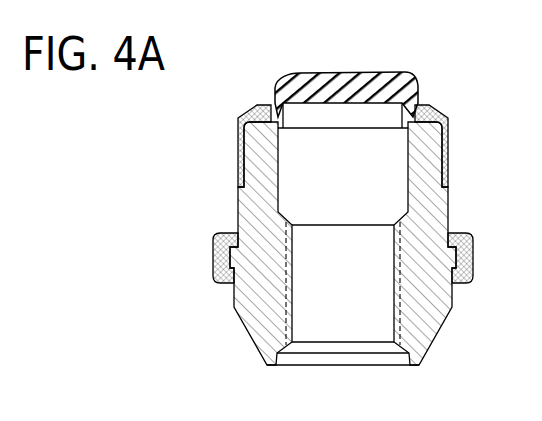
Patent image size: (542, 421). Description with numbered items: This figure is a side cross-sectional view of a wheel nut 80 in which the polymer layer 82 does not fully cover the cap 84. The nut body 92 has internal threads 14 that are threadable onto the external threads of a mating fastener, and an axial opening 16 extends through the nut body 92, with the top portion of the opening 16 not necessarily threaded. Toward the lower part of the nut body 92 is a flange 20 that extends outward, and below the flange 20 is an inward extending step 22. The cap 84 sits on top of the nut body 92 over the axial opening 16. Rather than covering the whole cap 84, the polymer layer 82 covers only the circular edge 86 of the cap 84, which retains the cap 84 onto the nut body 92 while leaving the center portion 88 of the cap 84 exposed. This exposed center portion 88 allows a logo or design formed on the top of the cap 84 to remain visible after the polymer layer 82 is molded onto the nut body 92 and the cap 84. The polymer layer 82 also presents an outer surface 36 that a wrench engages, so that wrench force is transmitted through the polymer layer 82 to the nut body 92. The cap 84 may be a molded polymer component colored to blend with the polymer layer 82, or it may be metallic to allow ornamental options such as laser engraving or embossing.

The wheel nut 80 is at (452, 47).
The polymer layer 82 is at (453, 121).
The cap 84 is at (392, 79).
The circular edge 86 is at (272, 92).
The center portion 88 is at (309, 80).
The axial opening 16 is at (375, 169).
The outer surface 36 is at (237, 143).
The flange 20 is at (456, 254).
The inward extending step 22 is at (456, 265).
The nut body 92 is at (430, 307).
The internal threads 14 is at (296, 316).